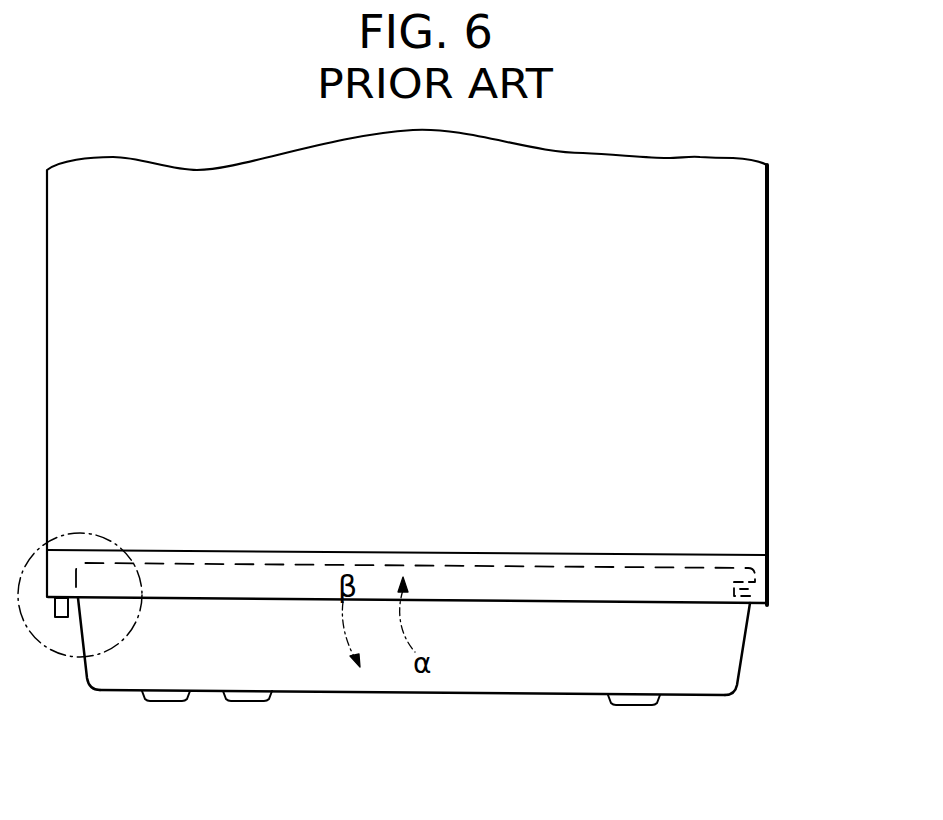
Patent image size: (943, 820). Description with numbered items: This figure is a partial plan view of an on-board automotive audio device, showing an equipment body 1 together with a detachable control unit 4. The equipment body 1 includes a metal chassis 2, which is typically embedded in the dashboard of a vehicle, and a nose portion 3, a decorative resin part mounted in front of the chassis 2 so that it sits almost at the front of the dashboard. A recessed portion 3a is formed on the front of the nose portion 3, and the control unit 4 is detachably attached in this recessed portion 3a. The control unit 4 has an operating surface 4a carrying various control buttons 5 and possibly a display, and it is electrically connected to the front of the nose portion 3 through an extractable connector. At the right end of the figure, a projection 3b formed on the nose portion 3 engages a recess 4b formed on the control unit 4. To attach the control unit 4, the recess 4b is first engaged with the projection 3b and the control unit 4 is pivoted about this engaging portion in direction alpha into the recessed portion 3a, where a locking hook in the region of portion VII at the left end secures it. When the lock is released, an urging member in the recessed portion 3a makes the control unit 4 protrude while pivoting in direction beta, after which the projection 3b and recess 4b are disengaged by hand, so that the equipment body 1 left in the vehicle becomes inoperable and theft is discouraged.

The equipment body 1 is at (768, 350).
The metal chassis 2 is at (740, 445).
The nose portion 3 is at (220, 551).
The recessed portion 3a is at (645, 565).
The projection 3b is at (757, 555).
The control unit 4 is at (708, 678).
The operating surface 4a is at (480, 695).
The recess 4b is at (727, 597).
The control buttons 5 is at (250, 703).
The portion VII is at (68, 657).